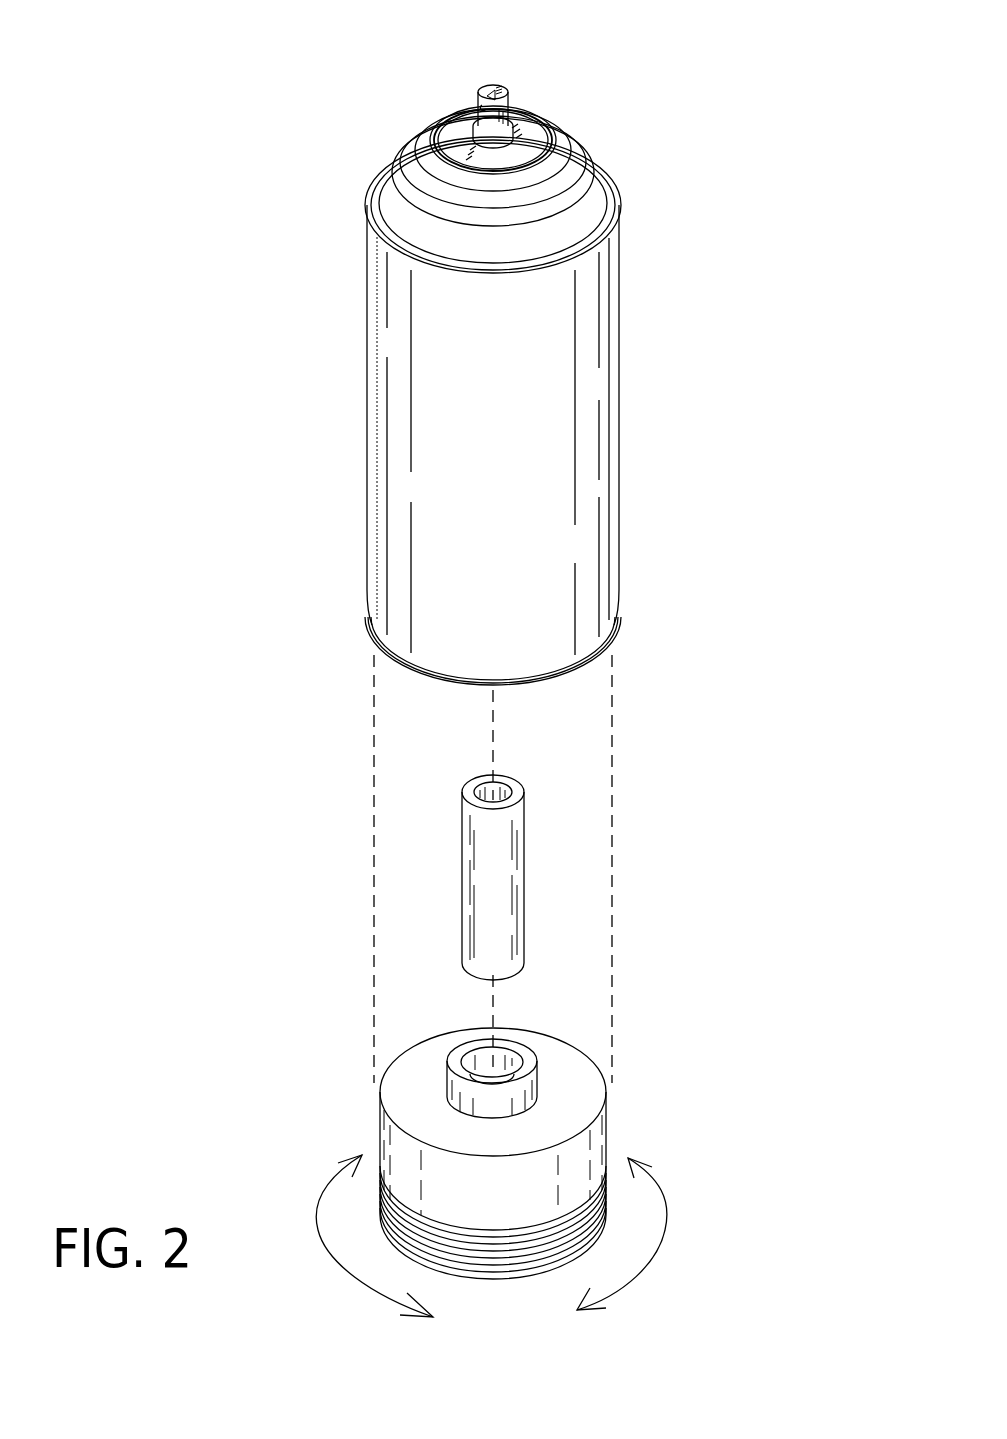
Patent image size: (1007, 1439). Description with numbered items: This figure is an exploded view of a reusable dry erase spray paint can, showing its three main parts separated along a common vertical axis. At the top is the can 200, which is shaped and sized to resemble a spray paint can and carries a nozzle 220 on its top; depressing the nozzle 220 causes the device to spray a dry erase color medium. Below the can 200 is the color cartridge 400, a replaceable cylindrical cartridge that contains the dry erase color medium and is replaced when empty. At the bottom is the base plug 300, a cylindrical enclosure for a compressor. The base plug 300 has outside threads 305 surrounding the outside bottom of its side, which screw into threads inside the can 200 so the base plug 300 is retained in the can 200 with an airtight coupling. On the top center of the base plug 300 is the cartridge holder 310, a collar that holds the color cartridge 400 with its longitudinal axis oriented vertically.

The can 200 is at (666, 104).
The nozzle 220 is at (503, 85).
The color cartridge 400 is at (663, 767).
The base plug 300 is at (715, 1050).
The outside threads 305 is at (397, 1228).
The cartridge holder 310 is at (463, 1055).